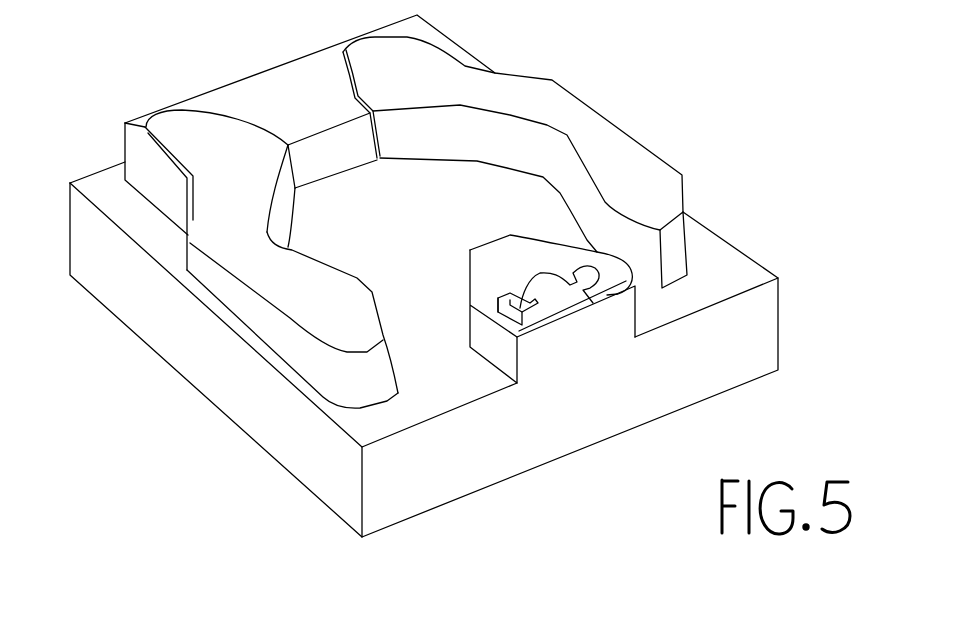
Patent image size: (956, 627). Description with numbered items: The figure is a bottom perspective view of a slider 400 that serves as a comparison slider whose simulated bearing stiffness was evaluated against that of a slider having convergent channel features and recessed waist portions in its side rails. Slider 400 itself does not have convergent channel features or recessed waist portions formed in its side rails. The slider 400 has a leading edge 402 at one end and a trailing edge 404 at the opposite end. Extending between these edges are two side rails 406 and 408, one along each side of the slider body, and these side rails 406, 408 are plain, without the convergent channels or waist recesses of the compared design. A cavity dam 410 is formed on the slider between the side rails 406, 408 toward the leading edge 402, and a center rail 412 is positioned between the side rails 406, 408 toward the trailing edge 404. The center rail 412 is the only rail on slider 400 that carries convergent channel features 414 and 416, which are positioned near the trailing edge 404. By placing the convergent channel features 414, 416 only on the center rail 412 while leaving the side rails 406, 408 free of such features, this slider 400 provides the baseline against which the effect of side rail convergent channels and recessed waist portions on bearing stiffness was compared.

The slider 400 is at (600, 60).
The leading edge 402 is at (220, 88).
The trailing edge 404 is at (478, 470).
The side rail 406 is at (585, 124).
The side rail 408 is at (243, 237).
The cavity dam 410 is at (302, 77).
The center rail 412 is at (472, 268).
The convergent channel feature 414 is at (573, 278).
The convergent channel feature 416 is at (525, 300).